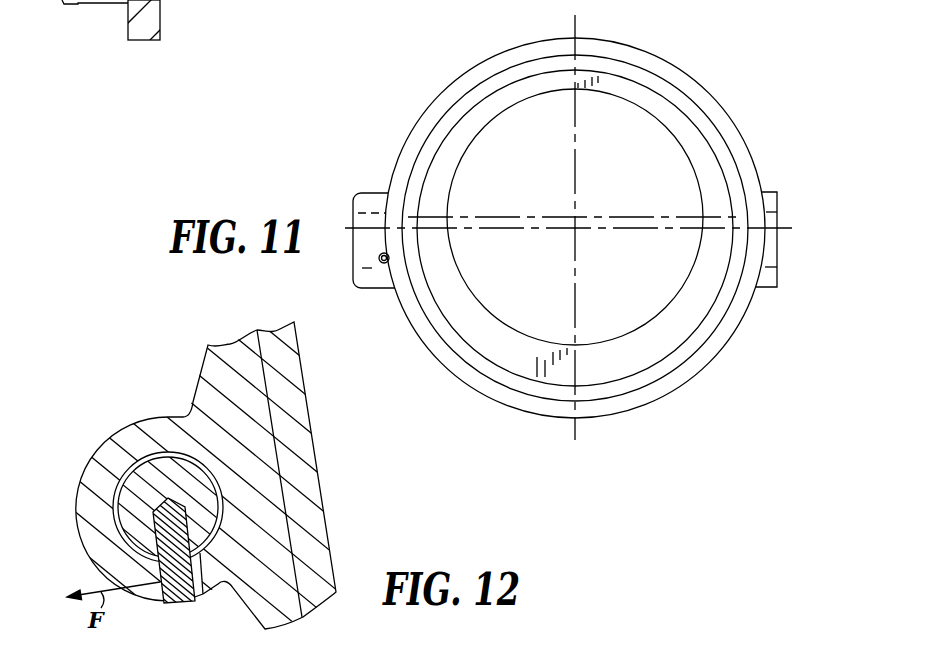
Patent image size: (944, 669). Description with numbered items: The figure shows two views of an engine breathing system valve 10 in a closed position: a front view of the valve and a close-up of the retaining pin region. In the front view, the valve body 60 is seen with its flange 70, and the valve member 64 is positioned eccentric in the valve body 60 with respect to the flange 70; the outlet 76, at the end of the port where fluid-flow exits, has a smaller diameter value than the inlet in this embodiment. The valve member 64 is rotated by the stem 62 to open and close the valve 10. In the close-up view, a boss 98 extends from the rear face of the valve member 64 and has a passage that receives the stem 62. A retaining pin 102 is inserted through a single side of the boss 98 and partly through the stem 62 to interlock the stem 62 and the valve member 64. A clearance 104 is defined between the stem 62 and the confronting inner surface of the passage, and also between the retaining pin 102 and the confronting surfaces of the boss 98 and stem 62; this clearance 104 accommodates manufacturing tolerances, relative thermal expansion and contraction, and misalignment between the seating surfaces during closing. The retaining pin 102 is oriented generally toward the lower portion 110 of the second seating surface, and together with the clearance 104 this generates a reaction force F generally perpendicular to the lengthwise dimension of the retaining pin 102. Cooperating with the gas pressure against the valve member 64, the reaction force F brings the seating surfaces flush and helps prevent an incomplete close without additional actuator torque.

In FIG. 11, the engine breathing system valve 10 is at (740, 82).
In FIG. 11, the valve body 60 is at (723, 128).
In FIG. 11, the valve member 64 is at (652, 128).
In FIG. 11, the flange 70 is at (643, 53).
In FIG. 11, the outlet 76 is at (616, 332).
In FIG. 12, the boss 98 is at (128, 438).
In FIG. 12, the stem 62 is at (114, 497).
In FIG. 12, the retaining pin 102 is at (181, 600).
In FIG. 12, the clearance 104 is at (220, 492).
In FIG. 11, the lower portion 110 is at (316, 0).